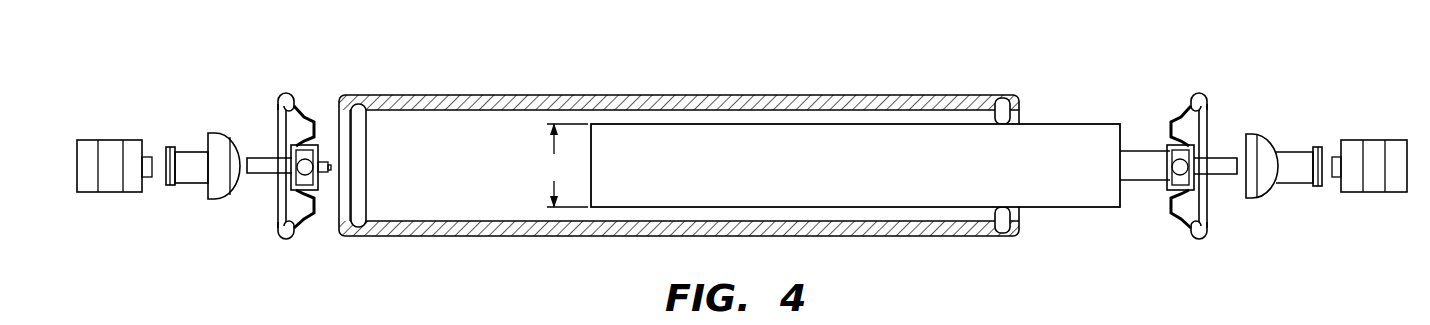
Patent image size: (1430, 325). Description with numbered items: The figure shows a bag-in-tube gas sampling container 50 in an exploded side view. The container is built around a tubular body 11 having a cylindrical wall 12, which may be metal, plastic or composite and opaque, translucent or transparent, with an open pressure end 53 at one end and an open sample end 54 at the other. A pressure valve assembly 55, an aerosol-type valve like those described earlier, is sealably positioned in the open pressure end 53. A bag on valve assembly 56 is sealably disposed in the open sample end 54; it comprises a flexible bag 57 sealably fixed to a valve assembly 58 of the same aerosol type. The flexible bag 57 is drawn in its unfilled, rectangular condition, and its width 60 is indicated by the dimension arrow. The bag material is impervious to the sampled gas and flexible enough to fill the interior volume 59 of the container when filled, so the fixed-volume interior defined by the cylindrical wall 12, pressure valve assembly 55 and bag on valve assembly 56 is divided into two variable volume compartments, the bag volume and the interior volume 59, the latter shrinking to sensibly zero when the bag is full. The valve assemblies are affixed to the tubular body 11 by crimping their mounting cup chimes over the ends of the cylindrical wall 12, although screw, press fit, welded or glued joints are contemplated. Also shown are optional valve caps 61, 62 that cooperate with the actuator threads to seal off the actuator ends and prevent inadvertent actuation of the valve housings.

The tubular body 11 is at (901, 86).
The cylindrical wall 12 is at (784, 95).
The gas sampling container 50 is at (391, 87).
The open pressure end 53 is at (343, 147).
The open sample end 54 is at (1013, 121).
The pressure valve assembly 55 is at (266, 110).
The bag on valve assembly 56 is at (1081, 114).
The flexible bag 57 is at (1062, 195).
The valve assembly 58 is at (1227, 97).
The interior volume 59 is at (462, 190).
The width 60 is at (563, 165).
The valve cap 61 is at (1374, 148).
The valve cap 62 is at (110, 150).